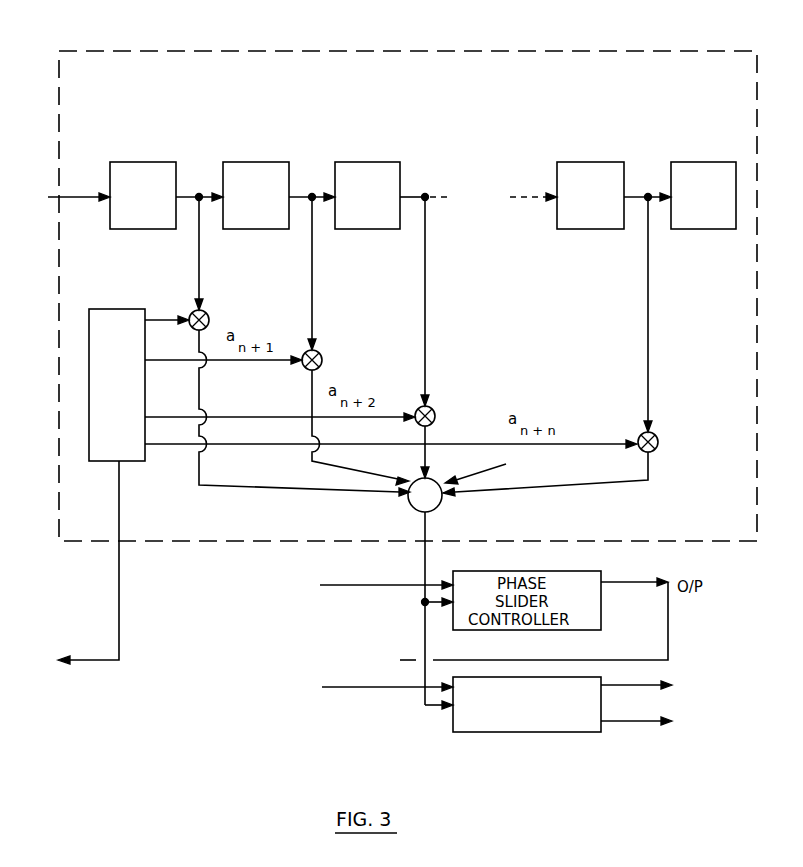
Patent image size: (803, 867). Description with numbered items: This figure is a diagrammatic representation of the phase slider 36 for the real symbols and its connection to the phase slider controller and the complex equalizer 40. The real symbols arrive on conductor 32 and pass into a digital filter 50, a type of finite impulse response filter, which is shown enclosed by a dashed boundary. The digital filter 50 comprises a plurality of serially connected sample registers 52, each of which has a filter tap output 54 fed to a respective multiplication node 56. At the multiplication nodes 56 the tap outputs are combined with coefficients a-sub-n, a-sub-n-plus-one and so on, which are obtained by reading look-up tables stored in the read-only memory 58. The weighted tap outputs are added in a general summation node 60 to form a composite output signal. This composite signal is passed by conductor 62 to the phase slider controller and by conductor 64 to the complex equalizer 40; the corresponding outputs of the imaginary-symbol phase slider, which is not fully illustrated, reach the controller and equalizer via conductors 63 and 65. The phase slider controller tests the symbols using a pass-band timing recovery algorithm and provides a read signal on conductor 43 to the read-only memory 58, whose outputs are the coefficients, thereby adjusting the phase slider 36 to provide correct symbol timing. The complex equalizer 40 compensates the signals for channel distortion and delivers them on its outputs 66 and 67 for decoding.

The phase slider 36 is at (450, 50).
The conductor 32 is at (55, 194).
The digital filter 50 is at (406, 155).
The sample registers 52 is at (220, 157).
The filter tap output 54 is at (204, 262).
The multiplication nodes 56 is at (210, 321).
The read-only memory 58 is at (89, 400).
The summation node 60 is at (438, 507).
The output of phase slider controller 43 is at (210, 658).
The conductor 62 is at (440, 607).
The conductor 63 is at (321, 590).
The conductor 64 is at (437, 708).
The conductor 65 is at (324, 692).
The complex equalizer 40 is at (520, 732).
The output of equalizer 66 is at (633, 692).
The output of equalizer 67 is at (633, 727).